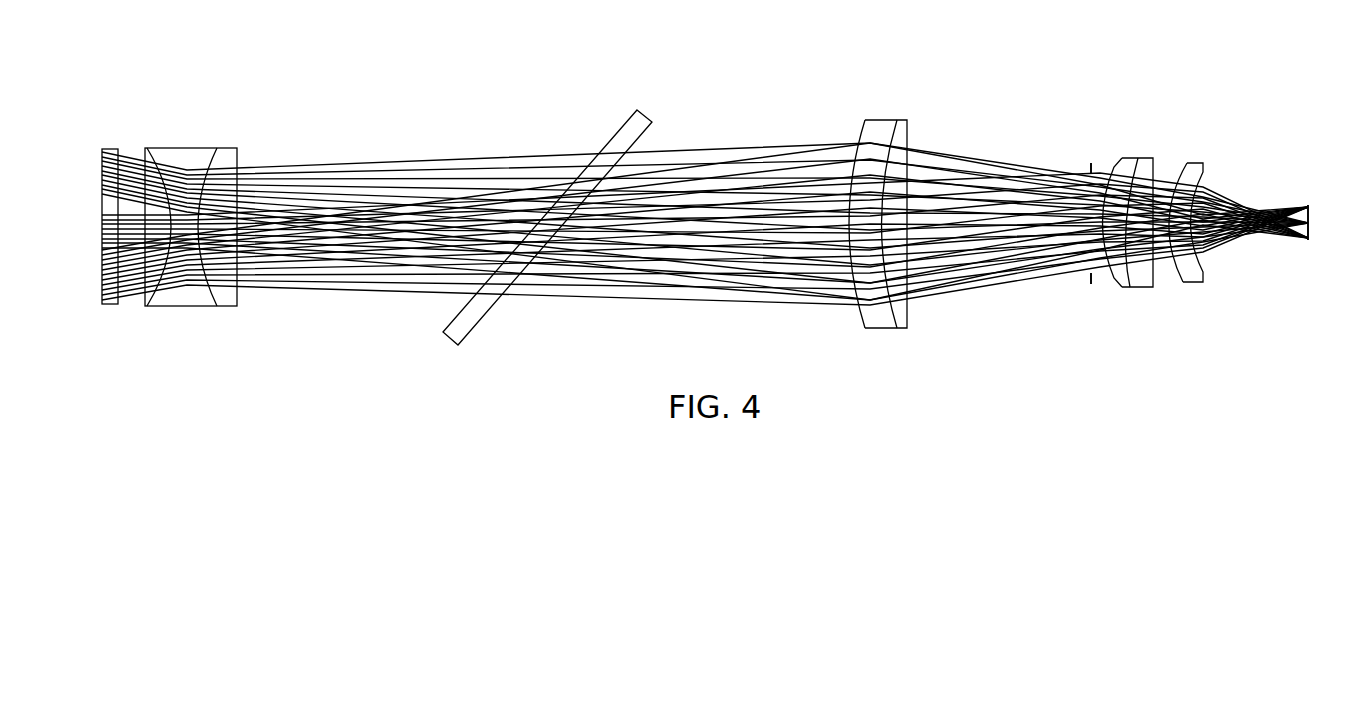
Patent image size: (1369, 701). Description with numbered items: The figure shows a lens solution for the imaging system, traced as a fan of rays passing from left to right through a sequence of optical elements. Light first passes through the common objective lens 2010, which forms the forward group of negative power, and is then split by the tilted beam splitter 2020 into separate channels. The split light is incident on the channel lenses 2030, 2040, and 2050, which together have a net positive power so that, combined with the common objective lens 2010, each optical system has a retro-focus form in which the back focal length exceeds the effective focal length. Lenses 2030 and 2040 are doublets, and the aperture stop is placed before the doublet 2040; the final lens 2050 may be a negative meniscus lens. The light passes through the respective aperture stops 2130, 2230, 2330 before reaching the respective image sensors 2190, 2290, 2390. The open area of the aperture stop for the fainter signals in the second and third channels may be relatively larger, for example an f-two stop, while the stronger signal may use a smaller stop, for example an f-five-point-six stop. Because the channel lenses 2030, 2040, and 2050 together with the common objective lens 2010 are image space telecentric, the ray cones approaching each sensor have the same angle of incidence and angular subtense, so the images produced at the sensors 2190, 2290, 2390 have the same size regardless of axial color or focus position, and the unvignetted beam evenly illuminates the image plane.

The common objective lens 2010 is at (203, 148).
The beam splitter 2020 is at (646, 111).
The lens 2030 is at (888, 120).
The lens 2040 is at (1140, 158).
The final lens 2050 is at (1197, 163).
The aperture stop 2130 is at (1091, 284).
The aperture stop 2230 is at (1080, 264).
The aperture stop 2330 is at (1080, 277).
The image sensor 2190 is at (1308, 241).
The image sensor 2290 is at (1295, 265).
The image sensor 2390 is at (1295, 278).